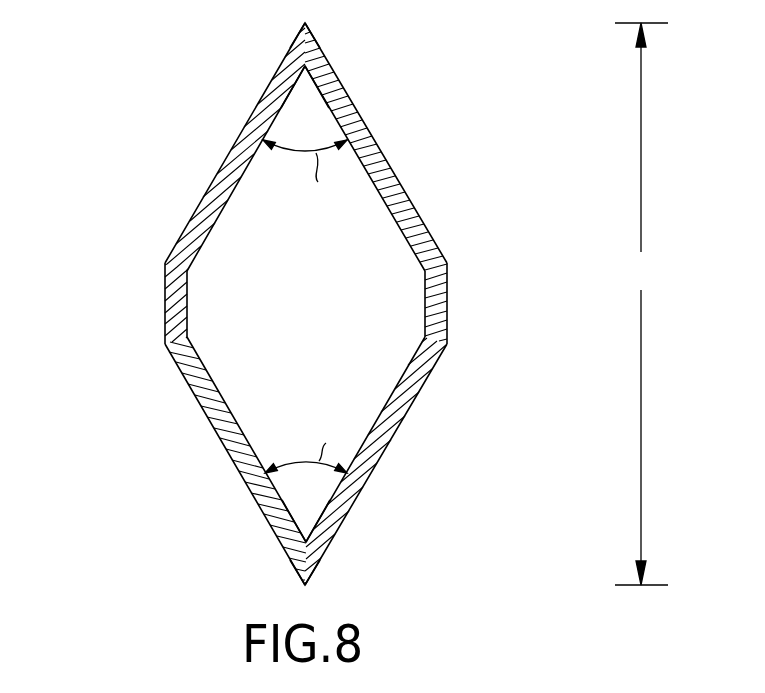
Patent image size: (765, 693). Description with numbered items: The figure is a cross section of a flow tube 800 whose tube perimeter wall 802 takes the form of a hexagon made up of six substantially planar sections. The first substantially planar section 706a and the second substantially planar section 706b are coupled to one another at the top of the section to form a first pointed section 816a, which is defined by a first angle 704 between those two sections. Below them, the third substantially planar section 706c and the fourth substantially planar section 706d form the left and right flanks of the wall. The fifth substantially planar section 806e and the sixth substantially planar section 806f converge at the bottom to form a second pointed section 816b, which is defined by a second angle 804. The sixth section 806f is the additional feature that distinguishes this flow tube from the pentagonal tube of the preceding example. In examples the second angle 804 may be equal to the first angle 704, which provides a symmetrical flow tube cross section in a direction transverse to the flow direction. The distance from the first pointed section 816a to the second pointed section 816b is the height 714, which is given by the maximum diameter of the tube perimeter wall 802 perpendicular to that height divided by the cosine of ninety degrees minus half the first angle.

The flow tube 800 is at (118, 62).
The tube perimeter wall 802 is at (353, 108).
The first pointed section 816a is at (316, 50).
The second pointed section 816b is at (303, 571).
The first substantially planar section 706a is at (226, 167).
The second substantially planar section 706b is at (408, 195).
The third substantially planar section 706c is at (165, 293).
The fourth substantially planar section 706d is at (448, 298).
The fifth substantially planar section 806e is at (197, 399).
The sixth substantially planar section 806f is at (403, 397).
The first angle θ1 704 is at (285, 152).
The second angle θ2 804 is at (288, 458).
The height h 714 is at (641, 180).